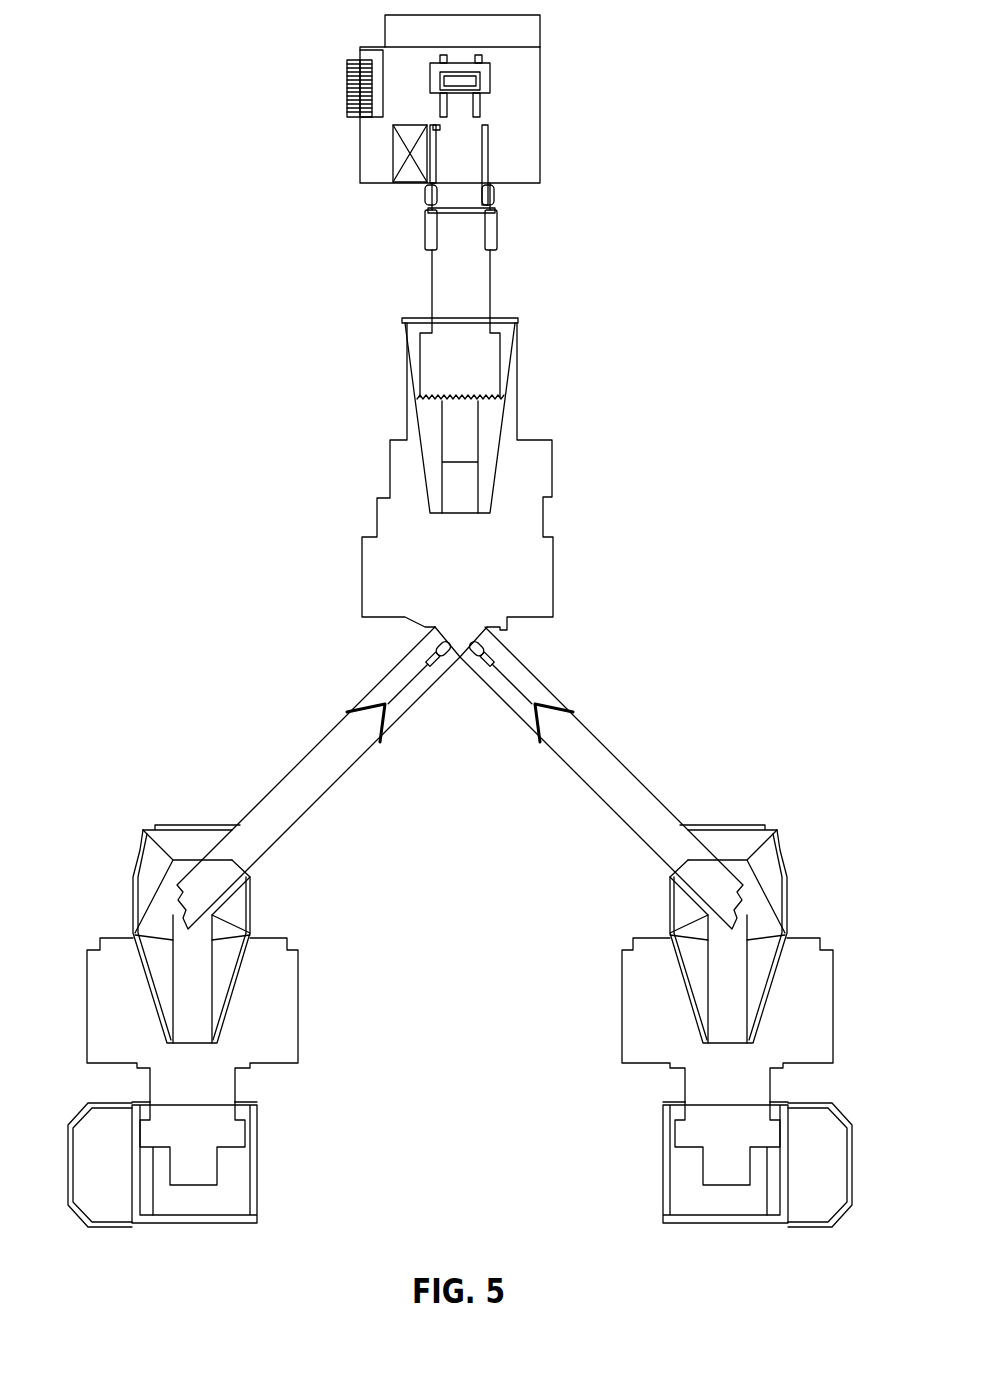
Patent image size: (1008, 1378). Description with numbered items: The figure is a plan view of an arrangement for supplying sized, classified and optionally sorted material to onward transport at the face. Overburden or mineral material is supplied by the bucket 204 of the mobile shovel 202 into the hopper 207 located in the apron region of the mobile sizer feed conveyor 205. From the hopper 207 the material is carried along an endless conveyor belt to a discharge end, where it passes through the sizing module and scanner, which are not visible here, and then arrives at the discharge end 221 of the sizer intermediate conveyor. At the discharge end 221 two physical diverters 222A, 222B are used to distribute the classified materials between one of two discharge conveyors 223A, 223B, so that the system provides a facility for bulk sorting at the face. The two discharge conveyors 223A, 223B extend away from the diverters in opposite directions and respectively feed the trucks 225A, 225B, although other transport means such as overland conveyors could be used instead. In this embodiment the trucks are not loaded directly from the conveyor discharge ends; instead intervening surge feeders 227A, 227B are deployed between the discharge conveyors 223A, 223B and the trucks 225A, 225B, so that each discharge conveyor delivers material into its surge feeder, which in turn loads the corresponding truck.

The mobile shovel 202 is at (568, 91).
The bucket 204 is at (488, 362).
The mobile sizer feed conveyor 205 is at (582, 507).
The hopper 207 is at (497, 432).
The discharge end of the sizer intermediate conveyor 221 is at (466, 622).
The physical diverter 222A is at (423, 662).
The physical diverter 222B is at (500, 660).
The discharge conveyor 223A is at (273, 800).
The discharge conveyor 223B is at (650, 800).
The truck 225A is at (250, 1170).
The truck 225B is at (670, 1170).
The surge feeder 227A is at (108, 995).
The surge feeder 227B is at (805, 985).